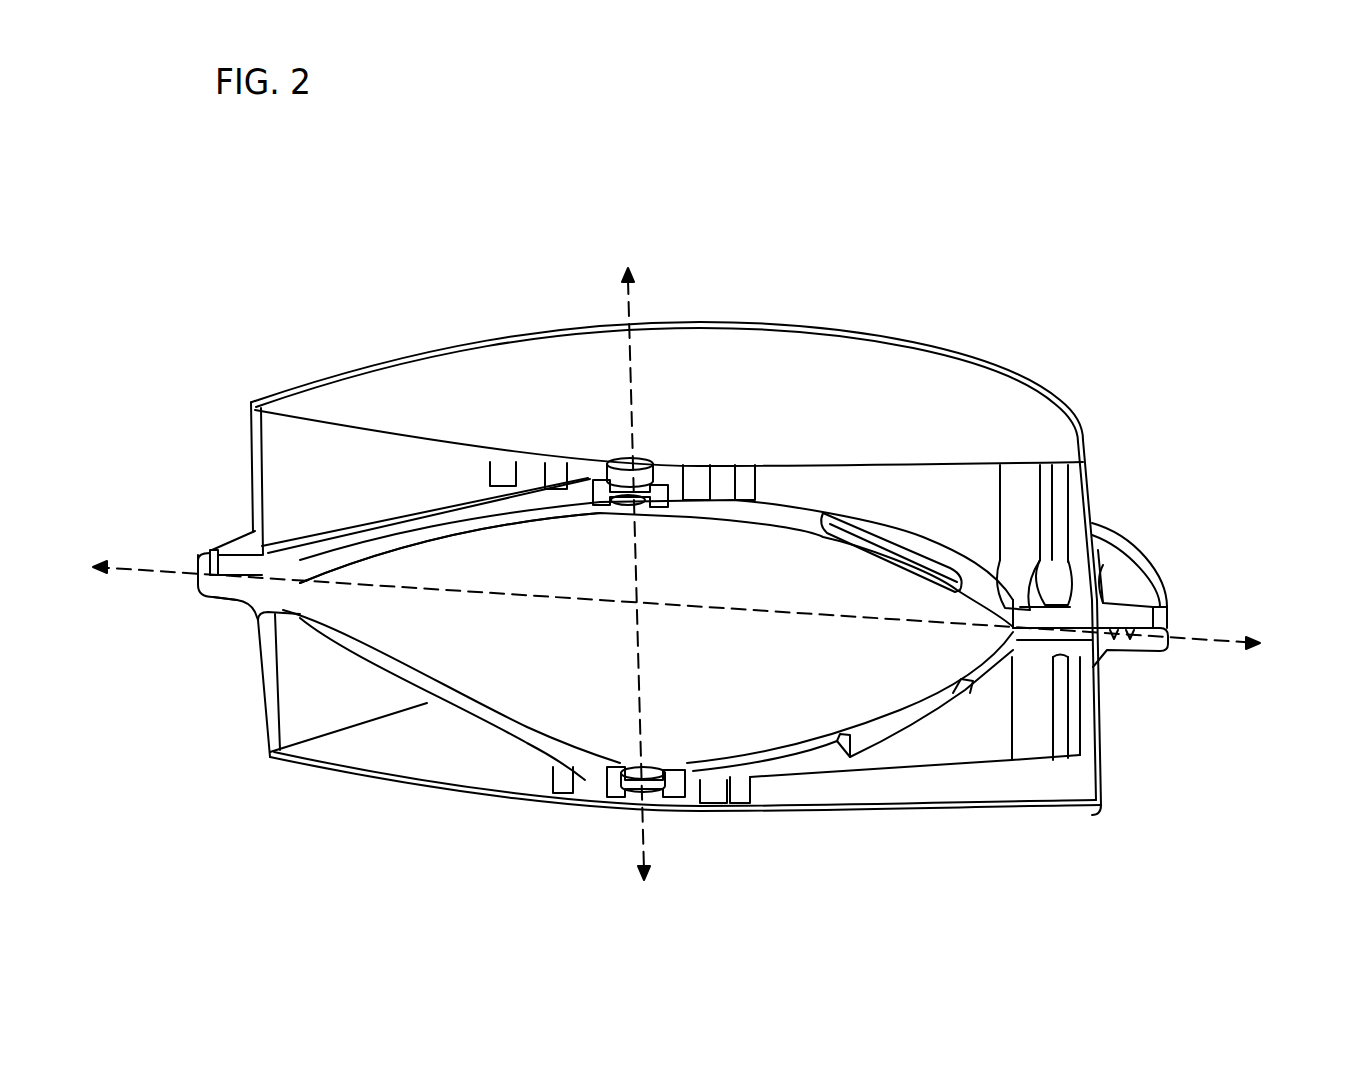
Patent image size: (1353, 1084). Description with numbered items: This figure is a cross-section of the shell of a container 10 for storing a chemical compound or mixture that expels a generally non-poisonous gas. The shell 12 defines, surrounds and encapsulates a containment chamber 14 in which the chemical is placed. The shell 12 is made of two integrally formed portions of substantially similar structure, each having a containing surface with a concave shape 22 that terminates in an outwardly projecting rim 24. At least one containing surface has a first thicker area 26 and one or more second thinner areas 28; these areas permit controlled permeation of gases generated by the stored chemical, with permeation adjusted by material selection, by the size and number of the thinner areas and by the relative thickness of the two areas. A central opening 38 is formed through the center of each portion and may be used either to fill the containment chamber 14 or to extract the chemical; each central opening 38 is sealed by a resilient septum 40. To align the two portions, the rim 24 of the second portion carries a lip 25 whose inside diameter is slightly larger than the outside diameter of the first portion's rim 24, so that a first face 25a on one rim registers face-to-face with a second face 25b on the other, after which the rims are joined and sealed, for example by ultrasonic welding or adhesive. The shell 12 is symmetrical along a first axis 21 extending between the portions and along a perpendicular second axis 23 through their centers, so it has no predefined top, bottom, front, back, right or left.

The container 10 is at (915, 290).
The shell 12 is at (1152, 552).
The containment chamber 14 is at (760, 686).
The first axis 21 is at (1230, 637).
The concave shape 22 is at (480, 520).
The second axis 23 is at (632, 298).
The outwardly projecting rim 24 is at (1128, 653).
The lip 25 is at (1163, 617).
The first face 25a is at (212, 551).
The second face 25b is at (228, 577).
The first thicker area 26 is at (990, 570).
The second thinner area 28 is at (900, 547).
The central opening 38 is at (615, 462).
The resilient septum 40 is at (585, 476).